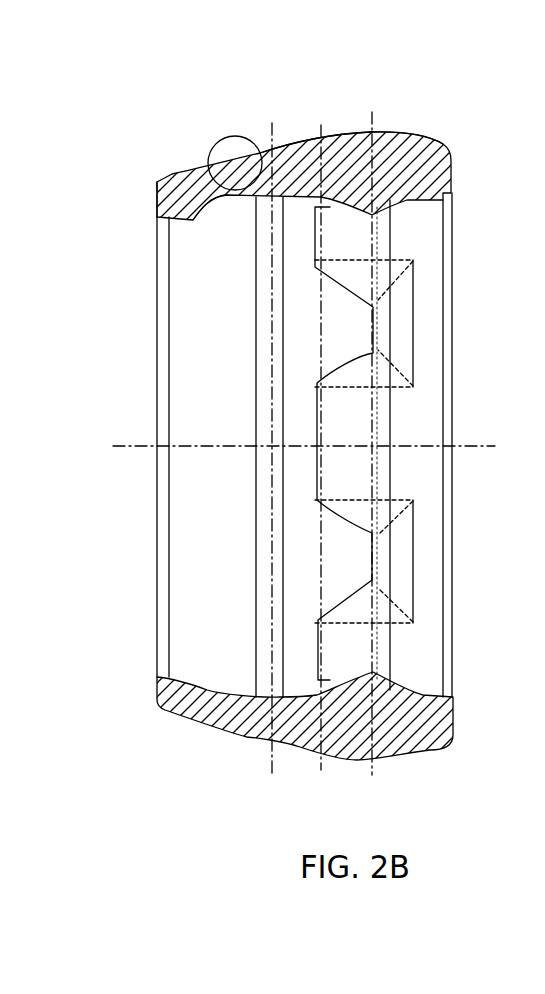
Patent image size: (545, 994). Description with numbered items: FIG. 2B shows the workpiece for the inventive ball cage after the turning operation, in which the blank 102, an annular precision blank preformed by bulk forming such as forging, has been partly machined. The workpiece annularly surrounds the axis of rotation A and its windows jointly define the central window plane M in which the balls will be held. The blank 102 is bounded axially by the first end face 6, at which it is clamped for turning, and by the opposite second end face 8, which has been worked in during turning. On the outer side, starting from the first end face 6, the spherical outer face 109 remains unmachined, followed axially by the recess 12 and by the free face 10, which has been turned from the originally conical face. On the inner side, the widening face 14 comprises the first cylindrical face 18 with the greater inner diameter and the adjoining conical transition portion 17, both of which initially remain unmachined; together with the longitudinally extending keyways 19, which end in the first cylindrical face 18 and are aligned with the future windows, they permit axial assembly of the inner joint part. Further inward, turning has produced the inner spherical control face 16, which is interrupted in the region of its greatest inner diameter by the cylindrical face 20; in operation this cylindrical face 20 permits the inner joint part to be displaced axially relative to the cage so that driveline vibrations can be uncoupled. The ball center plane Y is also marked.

The blank 102 is at (162, 128).
The free face 10 is at (186, 172).
The ball center plane Y is at (237, 112).
The recess 12 is at (268, 153).
The central window plane M is at (320, 128).
The spherical outer face 109 is at (393, 133).
The first end face 6 is at (452, 168).
The widening face 14 is at (425, 205).
The second end face 8 is at (157, 198).
The inner spherical control face 16 is at (157, 226).
The cylindrical face 20 is at (263, 360).
The keyways 19 is at (347, 412).
The axis of rotation A is at (438, 445).
The conical transition portion 17 is at (390, 680).
The first cylindrical face 18 is at (430, 690).